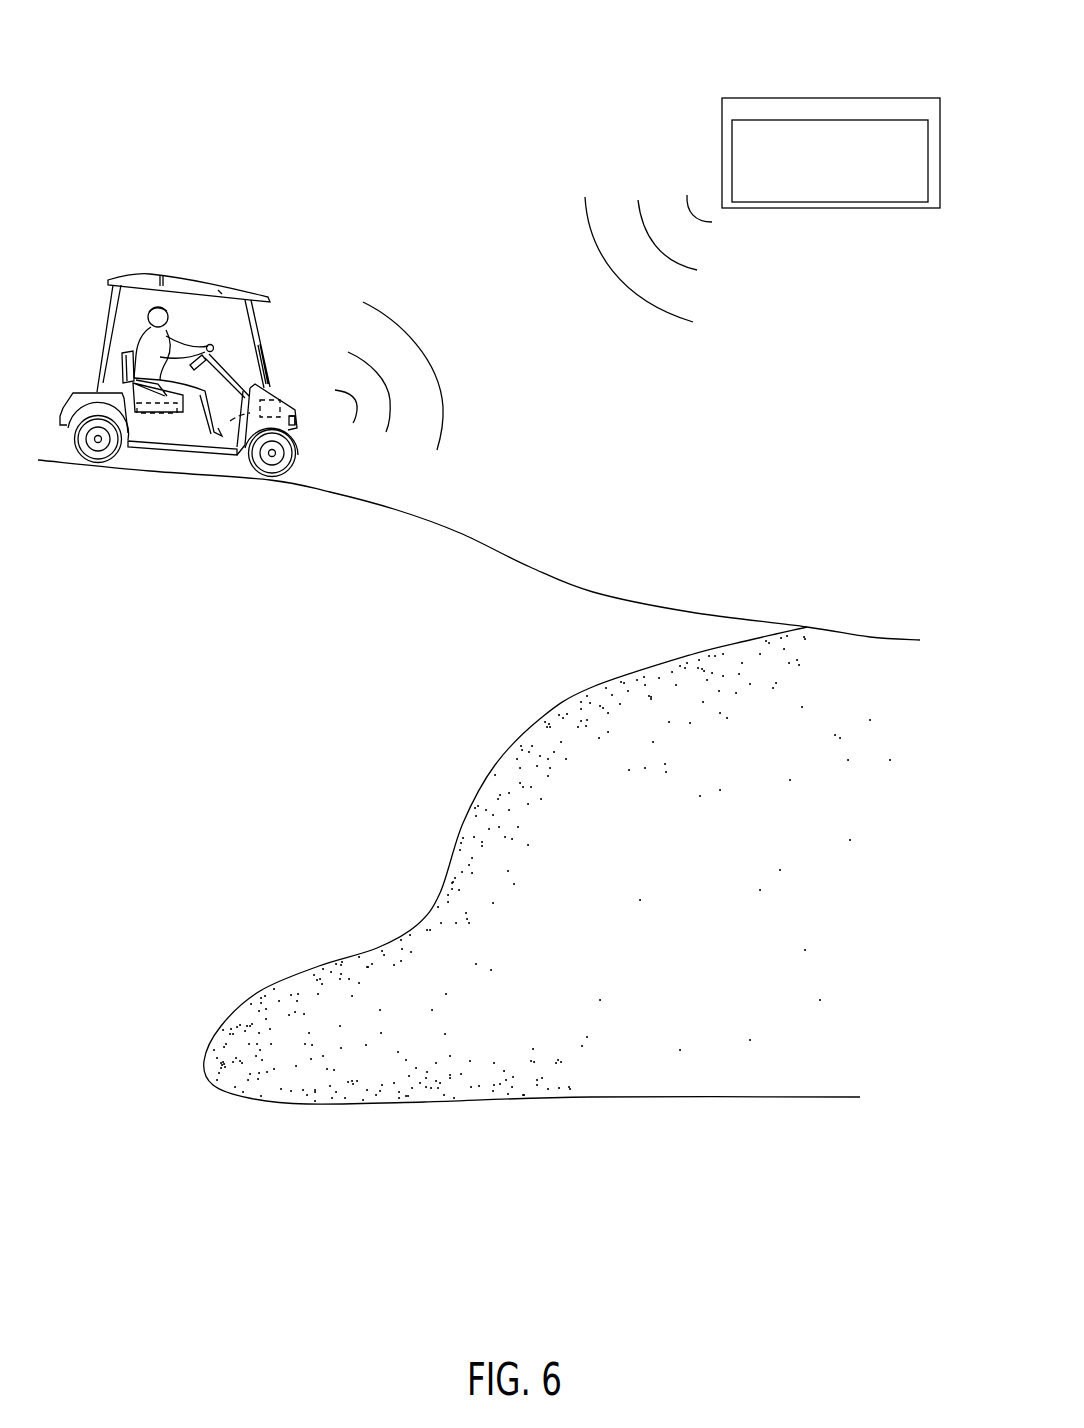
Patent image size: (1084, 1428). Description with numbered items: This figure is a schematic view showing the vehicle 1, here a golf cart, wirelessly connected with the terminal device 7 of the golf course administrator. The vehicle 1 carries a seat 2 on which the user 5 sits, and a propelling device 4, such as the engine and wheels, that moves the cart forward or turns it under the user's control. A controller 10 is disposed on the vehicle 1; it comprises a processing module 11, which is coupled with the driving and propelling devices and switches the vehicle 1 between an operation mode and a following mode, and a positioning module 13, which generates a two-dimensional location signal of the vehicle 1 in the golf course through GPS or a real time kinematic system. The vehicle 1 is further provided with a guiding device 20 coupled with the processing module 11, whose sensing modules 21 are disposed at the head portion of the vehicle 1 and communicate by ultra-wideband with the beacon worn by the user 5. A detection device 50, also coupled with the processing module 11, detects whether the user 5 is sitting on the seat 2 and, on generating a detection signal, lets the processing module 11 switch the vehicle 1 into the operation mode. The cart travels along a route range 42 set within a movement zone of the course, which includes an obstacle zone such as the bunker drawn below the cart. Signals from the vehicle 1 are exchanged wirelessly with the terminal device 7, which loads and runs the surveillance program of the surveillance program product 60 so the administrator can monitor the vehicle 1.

The vehicle 1 is at (245, 375).
The seat 2 is at (130, 365).
The propelling device 4 is at (83, 452).
The user 5 is at (170, 302).
The terminal device 7 is at (758, 115).
The controller 10 is at (279, 404).
The processing module 11 is at (230, 418).
The positioning module 13 is at (212, 343).
The guiding device 20 is at (296, 422).
The sensing module 21 is at (295, 425).
The route range 42 is at (593, 592).
The detection device 50 is at (157, 412).
The surveillance program product 60 is at (738, 127).